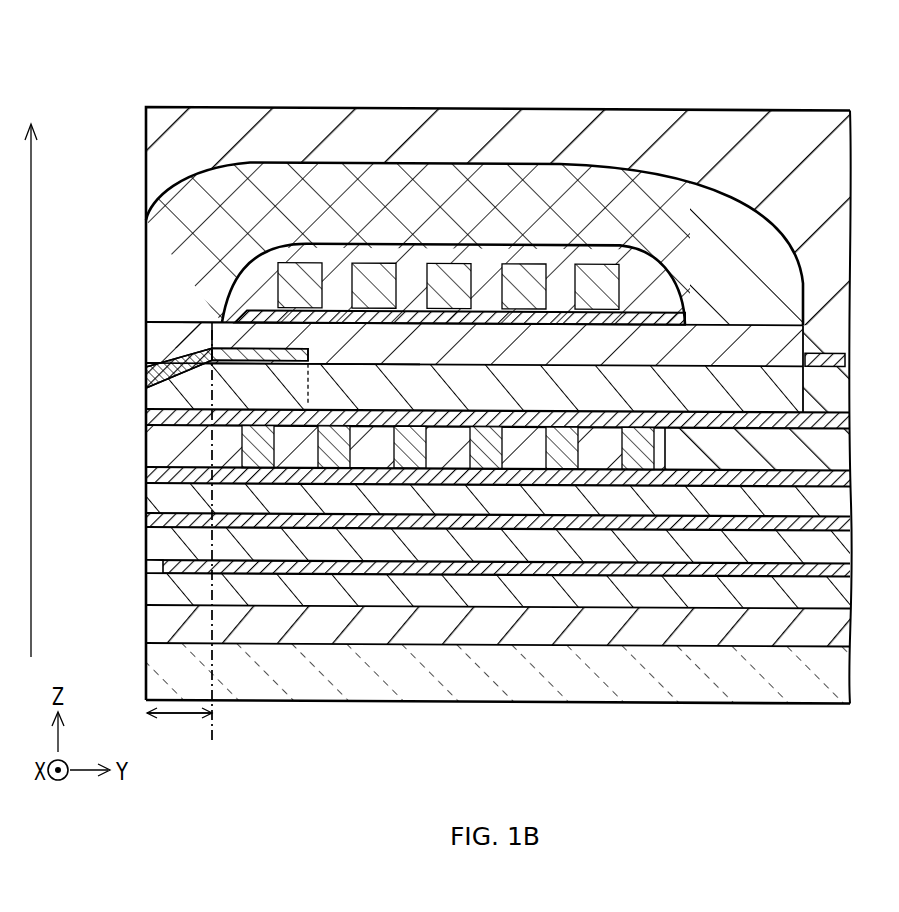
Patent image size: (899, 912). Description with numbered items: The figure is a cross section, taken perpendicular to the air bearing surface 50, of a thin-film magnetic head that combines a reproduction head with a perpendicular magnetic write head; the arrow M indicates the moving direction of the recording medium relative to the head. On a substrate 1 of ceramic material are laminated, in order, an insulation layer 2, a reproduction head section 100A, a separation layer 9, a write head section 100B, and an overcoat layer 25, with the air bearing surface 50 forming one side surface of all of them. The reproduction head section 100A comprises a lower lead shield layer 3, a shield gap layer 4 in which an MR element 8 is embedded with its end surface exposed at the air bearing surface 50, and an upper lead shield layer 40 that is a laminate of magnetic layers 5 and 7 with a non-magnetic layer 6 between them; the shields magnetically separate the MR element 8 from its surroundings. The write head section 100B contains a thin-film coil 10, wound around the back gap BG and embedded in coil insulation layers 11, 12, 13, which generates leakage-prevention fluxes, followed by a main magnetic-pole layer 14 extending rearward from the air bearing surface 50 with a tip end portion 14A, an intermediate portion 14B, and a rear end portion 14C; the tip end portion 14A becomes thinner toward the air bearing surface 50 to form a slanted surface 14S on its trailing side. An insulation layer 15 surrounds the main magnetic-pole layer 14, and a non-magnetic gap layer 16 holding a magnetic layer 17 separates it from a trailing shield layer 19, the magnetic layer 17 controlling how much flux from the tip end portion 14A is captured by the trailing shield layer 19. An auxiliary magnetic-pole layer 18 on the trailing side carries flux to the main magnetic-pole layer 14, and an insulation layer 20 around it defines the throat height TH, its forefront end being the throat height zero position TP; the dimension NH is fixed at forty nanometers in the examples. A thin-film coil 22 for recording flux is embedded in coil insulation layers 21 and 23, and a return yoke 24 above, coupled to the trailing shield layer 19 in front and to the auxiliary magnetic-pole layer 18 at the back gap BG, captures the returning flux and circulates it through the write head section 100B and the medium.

The substrate 1 is at (773, 652).
The insulation layer 2 is at (737, 629).
The lower lead shield layer 3 is at (703, 595).
The shield gap layer 4 is at (653, 570).
The magnetic layer 5 is at (607, 547).
The non-magnetic layer 6 is at (565, 526).
The magnetic layer 7 is at (525, 505).
The MR element 8 is at (152, 577).
The separation layer 9 is at (487, 474).
The thin-film coil 10 is at (444, 468).
The coil insulation layer 11 is at (410, 457).
The coil insulation layer 12 is at (790, 466).
The coil insulation layer 13 is at (362, 400).
The main magnetic-pole layer 14 is at (427, 53).
The tip end portion 14A is at (229, 340).
The intermediate portion 14B is at (284, 340).
The rear end portion 14C is at (356, 330).
The slanted surface 14S is at (150, 372).
The insulation layer 15 is at (825, 410).
The non-magnetic gap layer 16 is at (232, 400).
The magnetic layer 17 is at (185, 380).
The auxiliary magnetic-pole layer 18 is at (452, 336).
The trailing shield layer 19 is at (163, 335).
The insulation layer 20 is at (293, 390).
The coil insulation layer 21 is at (588, 276).
The thin-film coil 22 is at (520, 280).
The coil insulation layer 23 is at (640, 262).
The return yoke 24 is at (221, 182).
The overcoat layer 25 is at (810, 122).
The upper lead shield layer 40 is at (512, 746).
The air bearing surface 50 is at (144, 162).
The reproduction head section 100A is at (134, 483).
The write head section 100B is at (134, 227).
The back gap BG is at (717, 310).
The arrow M is at (32, 620).
The throat height TH is at (179, 728).
The dimension NH is at (179, 743).
The throat height zero position TP is at (212, 752).